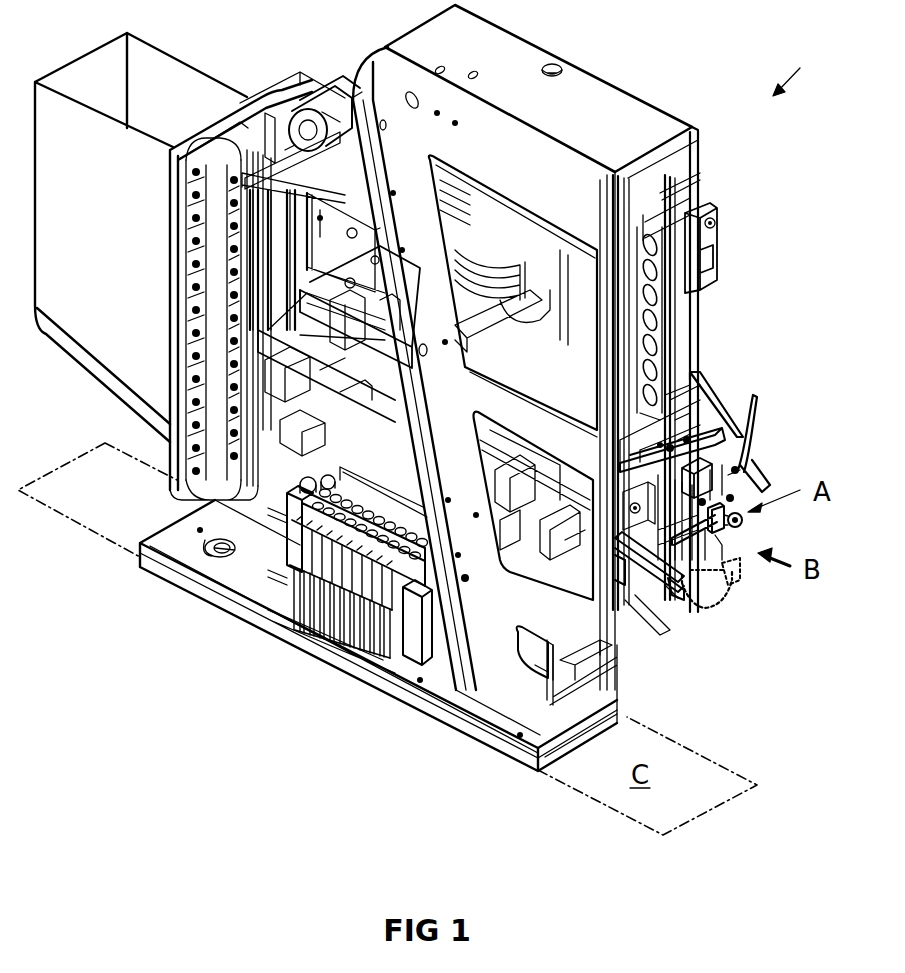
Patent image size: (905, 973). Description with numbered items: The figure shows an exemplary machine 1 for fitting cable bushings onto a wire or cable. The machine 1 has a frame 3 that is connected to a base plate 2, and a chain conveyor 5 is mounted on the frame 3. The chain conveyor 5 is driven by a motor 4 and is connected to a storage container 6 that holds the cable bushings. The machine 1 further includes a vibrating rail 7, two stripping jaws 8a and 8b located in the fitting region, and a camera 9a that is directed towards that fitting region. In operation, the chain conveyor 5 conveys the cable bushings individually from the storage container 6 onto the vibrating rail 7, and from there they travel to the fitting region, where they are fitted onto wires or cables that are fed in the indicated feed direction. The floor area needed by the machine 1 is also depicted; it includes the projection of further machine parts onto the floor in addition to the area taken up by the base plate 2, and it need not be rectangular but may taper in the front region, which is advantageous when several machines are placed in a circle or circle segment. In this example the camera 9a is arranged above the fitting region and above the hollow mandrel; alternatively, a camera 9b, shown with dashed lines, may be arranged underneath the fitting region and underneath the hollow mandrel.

The machine 1 is at (818, 70).
The base plate 2 is at (225, 597).
The frame 3 is at (598, 78).
The motor 4 is at (295, 105).
The chain conveyor 5 is at (212, 438).
The storage container 6 is at (92, 72).
The vibrating rail 7 is at (383, 333).
The stripping jaw 8a is at (742, 522).
The stripping jaw 8b is at (733, 577).
The camera 9a is at (723, 473).
The camera 9b is at (713, 605).